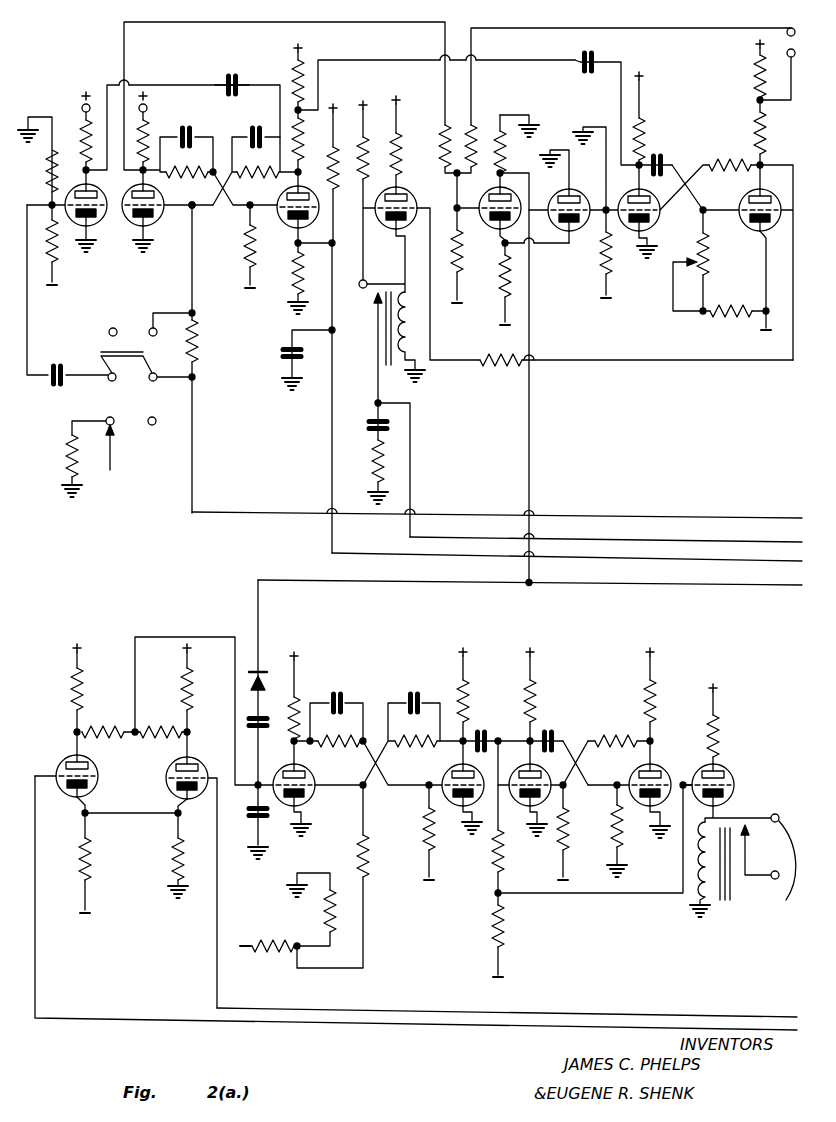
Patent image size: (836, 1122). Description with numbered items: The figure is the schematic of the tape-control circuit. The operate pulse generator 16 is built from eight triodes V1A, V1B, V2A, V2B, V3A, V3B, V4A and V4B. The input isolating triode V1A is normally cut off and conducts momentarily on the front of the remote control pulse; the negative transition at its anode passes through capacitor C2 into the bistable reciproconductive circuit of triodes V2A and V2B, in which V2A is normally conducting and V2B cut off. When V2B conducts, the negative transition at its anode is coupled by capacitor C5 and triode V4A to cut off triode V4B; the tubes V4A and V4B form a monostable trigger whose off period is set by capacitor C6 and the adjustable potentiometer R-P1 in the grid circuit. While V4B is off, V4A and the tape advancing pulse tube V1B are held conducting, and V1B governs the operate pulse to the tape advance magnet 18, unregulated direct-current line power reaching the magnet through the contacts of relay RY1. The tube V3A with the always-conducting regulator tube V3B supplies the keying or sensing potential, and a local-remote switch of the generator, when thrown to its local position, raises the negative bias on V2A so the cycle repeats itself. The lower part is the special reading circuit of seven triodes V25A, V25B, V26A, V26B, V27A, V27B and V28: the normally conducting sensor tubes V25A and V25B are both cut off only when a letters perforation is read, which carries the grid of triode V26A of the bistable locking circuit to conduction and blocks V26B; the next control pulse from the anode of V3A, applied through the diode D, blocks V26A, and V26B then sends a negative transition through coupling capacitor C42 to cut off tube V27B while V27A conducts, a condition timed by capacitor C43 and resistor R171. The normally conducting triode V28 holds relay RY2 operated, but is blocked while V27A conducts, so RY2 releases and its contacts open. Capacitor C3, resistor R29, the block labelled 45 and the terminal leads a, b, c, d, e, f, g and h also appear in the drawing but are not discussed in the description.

The tape advance magnet 18 is at (418, 56).
The control unit 45 is at (390, 663).
The operate pulse generator 16 is at (128, 392).
The capacitor C2 is at (247, 62).
The capacitor C3 is at (198, 119).
The coupling capacitor C5 is at (578, 68).
The capacitor C6 is at (671, 157).
The coupling capacitor C42 is at (480, 726).
The capacitor C43 is at (556, 727).
The input isolating tube V1A is at (84, 232).
The tape advancing pulse tube V1B is at (381, 226).
The triode V2A is at (128, 232).
The triode V2B is at (286, 179).
The triode V3A is at (492, 233).
The triode V3B is at (569, 234).
The triode V4A is at (633, 240).
The triode V4B is at (748, 200).
The special sensor tube V25A is at (167, 787).
The special sensor tube V25B is at (88, 759).
The triode V26A is at (313, 757).
The triode V26B is at (440, 741).
The triode V27A is at (533, 810).
The triode V27B is at (629, 743).
The triode V28 is at (752, 773).
The relay RY1 is at (373, 340).
The relay RY2 is at (688, 905).
The adjustable potentiometer R-P1 is at (714, 262).
The resistor R29 is at (731, 318).
The resistor R171 is at (626, 848).
The diode D is at (264, 680).
The terminal a is at (800, 38).
The terminal b is at (797, 58).
The terminal line c is at (497, 508).
The terminal line d is at (606, 534).
The terminal line e is at (567, 566).
The terminal line f is at (530, 596).
The terminal line g is at (763, 1013).
The terminal line h is at (776, 1032).